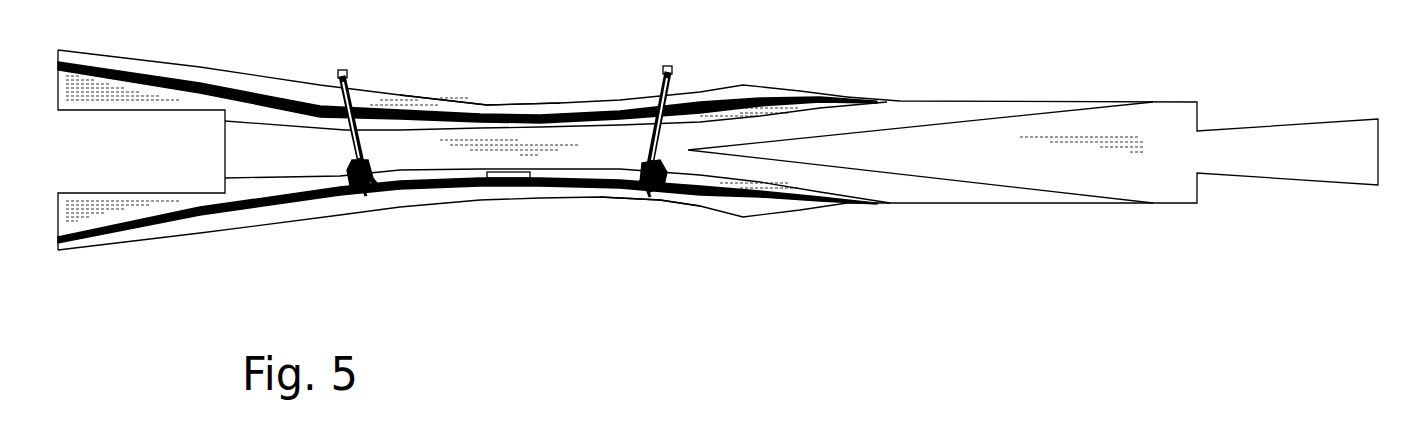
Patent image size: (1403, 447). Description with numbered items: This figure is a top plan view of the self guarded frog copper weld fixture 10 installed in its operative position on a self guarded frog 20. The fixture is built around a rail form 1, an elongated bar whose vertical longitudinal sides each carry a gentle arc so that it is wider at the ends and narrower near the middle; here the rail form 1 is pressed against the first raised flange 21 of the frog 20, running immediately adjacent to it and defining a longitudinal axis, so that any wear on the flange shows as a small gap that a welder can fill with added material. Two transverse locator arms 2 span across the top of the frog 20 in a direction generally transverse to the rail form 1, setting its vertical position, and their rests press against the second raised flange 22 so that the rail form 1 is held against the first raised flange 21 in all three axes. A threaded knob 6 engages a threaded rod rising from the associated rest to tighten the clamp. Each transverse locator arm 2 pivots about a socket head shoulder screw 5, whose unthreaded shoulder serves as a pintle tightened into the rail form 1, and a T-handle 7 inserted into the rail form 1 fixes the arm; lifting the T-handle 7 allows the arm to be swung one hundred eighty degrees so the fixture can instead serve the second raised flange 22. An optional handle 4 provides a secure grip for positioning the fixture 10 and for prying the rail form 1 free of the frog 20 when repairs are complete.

The rail form 1 is at (577, 178).
The transverse locator arm 2 is at (676, 72).
The handle 4 is at (502, 187).
The socket head shoulder screw 5 is at (665, 190).
The threaded knob 6 is at (653, 107).
The T-handle 7 is at (637, 195).
The self guarded frog copper weld fixture 10 is at (344, 68).
The self guarded frog 20 is at (195, 66).
The first raised flange 21 is at (333, 200).
The second raised flange 22 is at (487, 104).